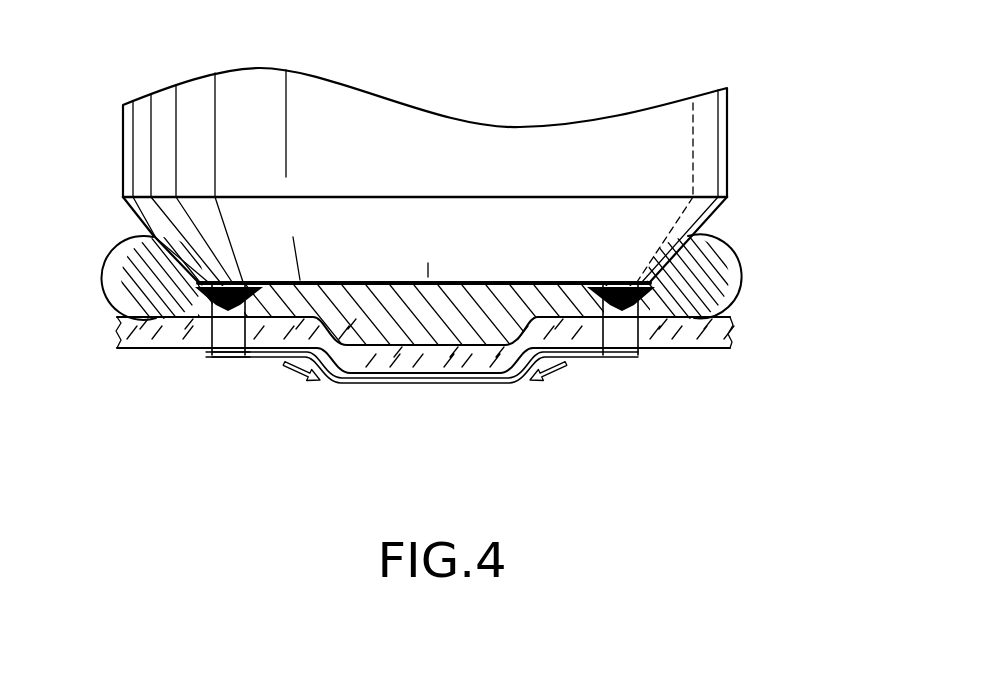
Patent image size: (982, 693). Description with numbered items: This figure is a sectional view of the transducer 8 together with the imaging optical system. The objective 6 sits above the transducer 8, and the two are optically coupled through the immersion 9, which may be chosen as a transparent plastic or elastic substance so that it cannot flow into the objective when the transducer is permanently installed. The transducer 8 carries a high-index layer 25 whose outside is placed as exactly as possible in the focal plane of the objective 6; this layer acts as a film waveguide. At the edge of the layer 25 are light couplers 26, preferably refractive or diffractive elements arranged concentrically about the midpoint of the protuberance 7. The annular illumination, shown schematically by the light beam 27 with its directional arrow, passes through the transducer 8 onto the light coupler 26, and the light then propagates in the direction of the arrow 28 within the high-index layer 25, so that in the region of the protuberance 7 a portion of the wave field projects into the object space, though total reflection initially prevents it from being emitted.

The objective 6 is at (682, 133).
The protuberance 7 is at (390, 363).
The transducer 8 is at (732, 328).
The immersion 9 is at (693, 280).
The high-index layer 25 is at (265, 357).
The light couplers 26 is at (215, 353).
The light beam 27 is at (182, 348).
The arrow 28 is at (317, 390).